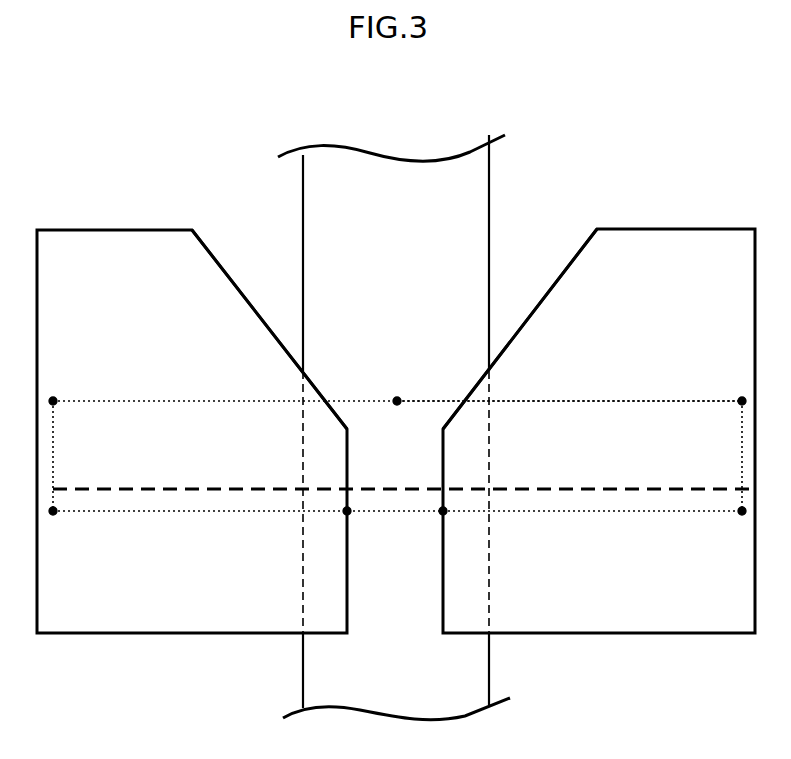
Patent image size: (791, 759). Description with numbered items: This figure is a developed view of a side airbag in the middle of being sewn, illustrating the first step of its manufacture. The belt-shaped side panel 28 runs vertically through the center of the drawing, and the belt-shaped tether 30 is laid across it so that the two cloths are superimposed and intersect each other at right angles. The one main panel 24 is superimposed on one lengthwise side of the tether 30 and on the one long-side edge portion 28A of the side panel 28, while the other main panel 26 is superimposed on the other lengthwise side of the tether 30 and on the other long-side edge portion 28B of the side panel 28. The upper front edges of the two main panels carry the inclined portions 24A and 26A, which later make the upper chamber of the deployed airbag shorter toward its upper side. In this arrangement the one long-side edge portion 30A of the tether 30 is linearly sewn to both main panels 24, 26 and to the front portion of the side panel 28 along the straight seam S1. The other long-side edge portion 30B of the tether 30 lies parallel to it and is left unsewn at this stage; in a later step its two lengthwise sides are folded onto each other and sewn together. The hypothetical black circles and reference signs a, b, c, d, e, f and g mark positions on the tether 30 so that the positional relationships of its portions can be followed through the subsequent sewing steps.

The main panel 24 is at (691, 226).
The inclined portion 24A is at (553, 283).
The main panel 26 is at (129, 226).
The inclined portion 26A is at (243, 292).
The side panel 28 is at (491, 190).
The one long-side edge portion 28A is at (489, 681).
The other long-side edge portion 28B is at (303, 695).
The tether 30 is at (120, 394).
The one long-side edge portion 30A is at (597, 514).
The other long-side edge portion 30B is at (640, 397).
The seam S1 is at (150, 491).
The reference sign a is at (53, 398).
The reference sign b is at (742, 398).
The reference sign c is at (397, 398).
The reference sign d is at (53, 514).
The reference sign e is at (742, 514).
The reference sign f is at (349, 513).
The reference sign g is at (443, 514).